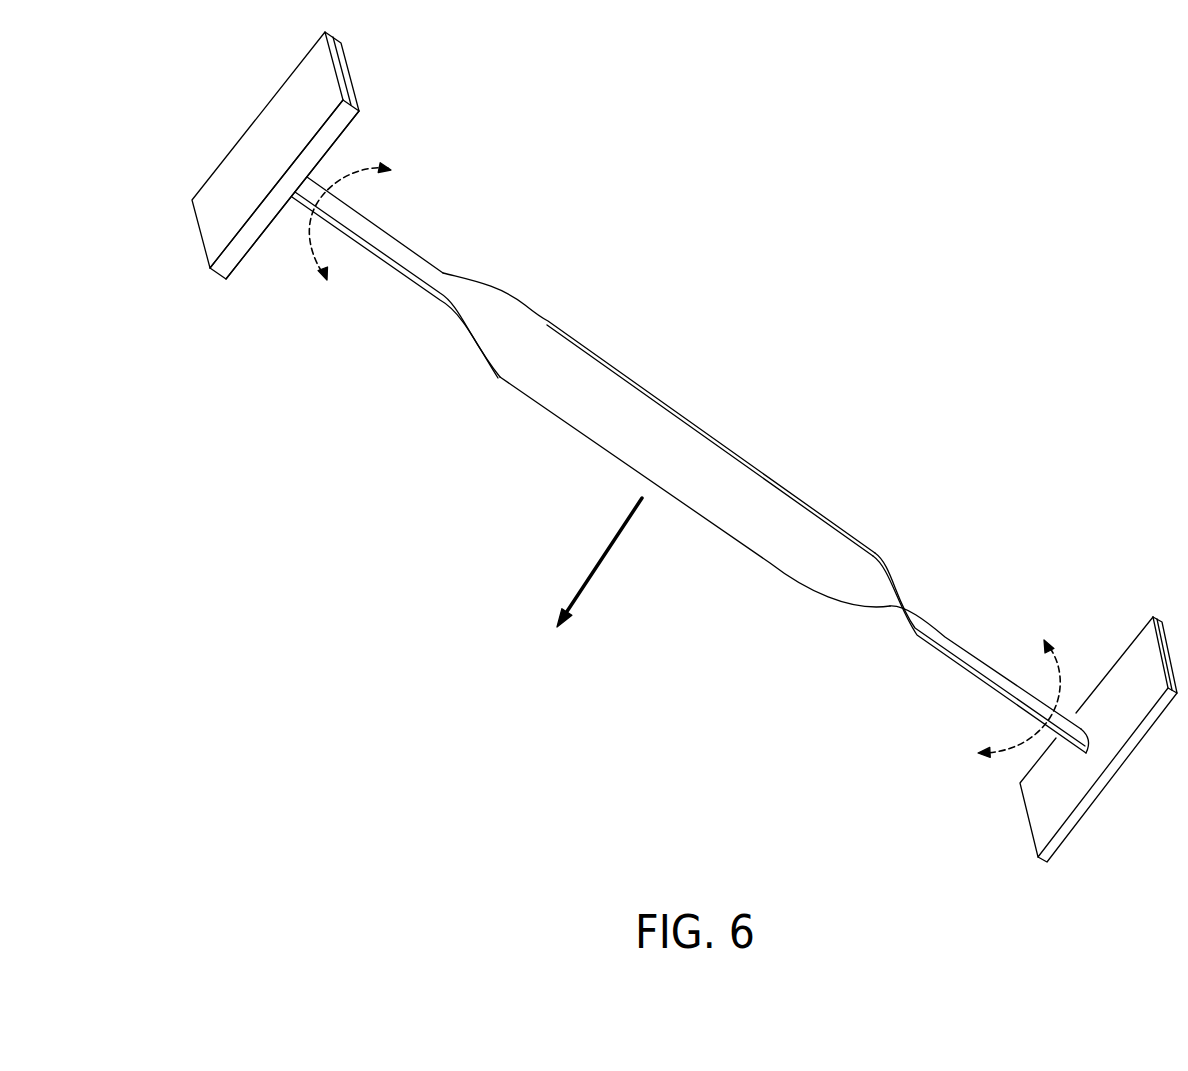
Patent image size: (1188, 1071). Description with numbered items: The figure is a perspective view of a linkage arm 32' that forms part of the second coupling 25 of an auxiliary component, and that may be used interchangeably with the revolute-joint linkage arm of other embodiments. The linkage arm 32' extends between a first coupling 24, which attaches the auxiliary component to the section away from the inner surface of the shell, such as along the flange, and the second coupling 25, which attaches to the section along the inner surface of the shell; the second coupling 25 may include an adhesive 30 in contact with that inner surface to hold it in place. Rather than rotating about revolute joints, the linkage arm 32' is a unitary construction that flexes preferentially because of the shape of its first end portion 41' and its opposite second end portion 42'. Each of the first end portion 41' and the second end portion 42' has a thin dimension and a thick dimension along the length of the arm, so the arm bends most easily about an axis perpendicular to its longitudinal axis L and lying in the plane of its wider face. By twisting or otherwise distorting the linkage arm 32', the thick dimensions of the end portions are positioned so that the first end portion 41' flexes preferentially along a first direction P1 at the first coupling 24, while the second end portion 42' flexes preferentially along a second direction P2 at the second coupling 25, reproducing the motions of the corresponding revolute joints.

The adhesive 30 is at (262, 147).
The first coupling 24 is at (1043, 820).
The second coupling 25 is at (232, 267).
The linkage arm 32' is at (706, 419).
The first end portion 41' is at (981, 615).
The second end portion 42' is at (420, 256).
The first direction P1 is at (996, 699).
The second direction P2 is at (350, 239).
The longitudinal direction L is at (599, 572).